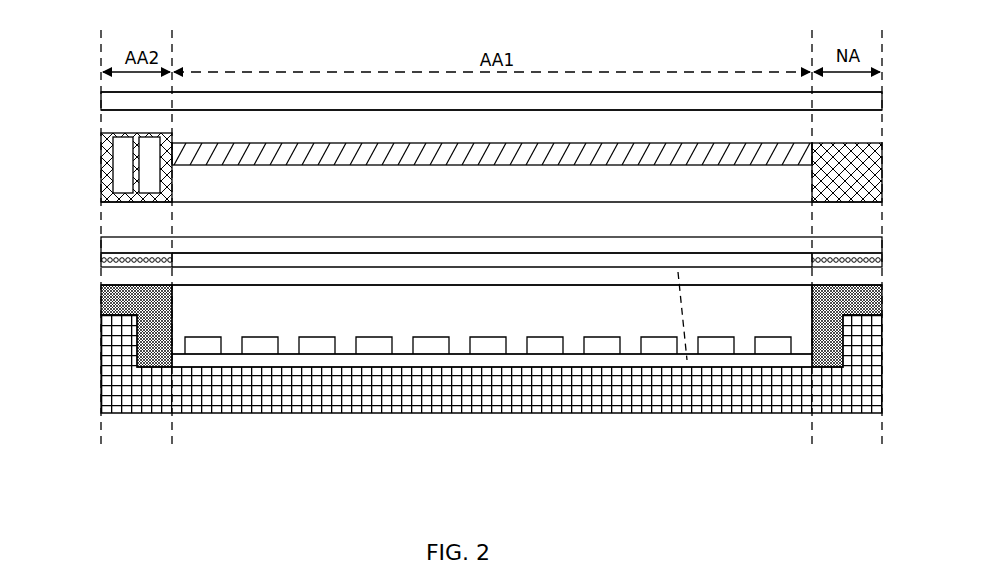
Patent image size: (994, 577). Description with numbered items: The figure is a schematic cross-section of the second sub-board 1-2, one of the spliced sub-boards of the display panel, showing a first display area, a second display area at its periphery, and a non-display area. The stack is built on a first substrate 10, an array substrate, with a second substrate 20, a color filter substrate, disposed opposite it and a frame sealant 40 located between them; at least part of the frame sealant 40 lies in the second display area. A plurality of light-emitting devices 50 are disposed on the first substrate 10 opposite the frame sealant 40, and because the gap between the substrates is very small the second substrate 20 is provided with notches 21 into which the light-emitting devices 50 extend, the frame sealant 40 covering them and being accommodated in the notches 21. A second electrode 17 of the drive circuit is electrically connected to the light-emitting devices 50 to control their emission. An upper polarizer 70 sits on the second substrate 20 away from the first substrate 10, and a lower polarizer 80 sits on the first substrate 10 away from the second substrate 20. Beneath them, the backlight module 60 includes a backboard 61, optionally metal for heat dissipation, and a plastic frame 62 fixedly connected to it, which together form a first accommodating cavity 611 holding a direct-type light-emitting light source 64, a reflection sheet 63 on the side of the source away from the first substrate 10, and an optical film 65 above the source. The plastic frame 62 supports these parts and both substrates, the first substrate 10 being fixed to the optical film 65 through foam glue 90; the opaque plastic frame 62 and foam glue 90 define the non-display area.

The second sub-board 1-2 is at (229, 46).
The first substrate 10 is at (878, 213).
The second electrode 17 is at (845, 157).
The second substrate 20 is at (878, 128).
The notch 21 is at (120, 142).
The frame sealant 40 is at (878, 184).
The light-emitting device 50 is at (120, 173).
The backlight module 60 is at (491, 383).
The backboard 61 is at (652, 388).
The plastic frame 62 is at (830, 372).
The reflection sheet 63 is at (598, 357).
The light-emitting light source 64 is at (535, 340).
The optical film 65 is at (701, 366).
The upper polarizer 70 is at (878, 104).
The lower polarizer 80 is at (868, 249).
The foam glue 90 is at (875, 265).
The first accommodating cavity 611 is at (232, 320).